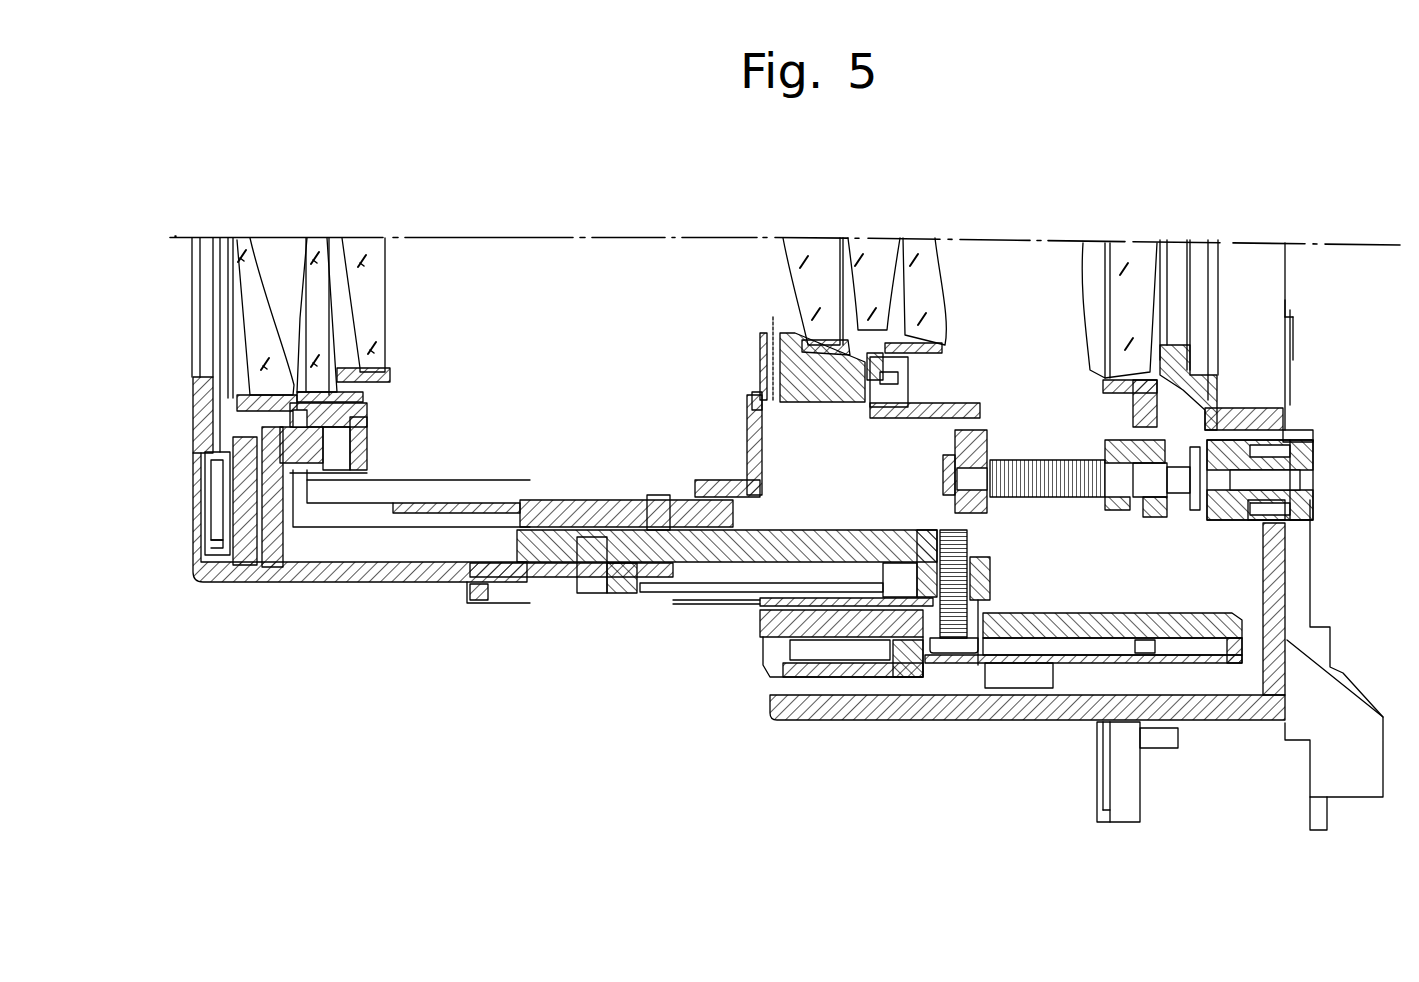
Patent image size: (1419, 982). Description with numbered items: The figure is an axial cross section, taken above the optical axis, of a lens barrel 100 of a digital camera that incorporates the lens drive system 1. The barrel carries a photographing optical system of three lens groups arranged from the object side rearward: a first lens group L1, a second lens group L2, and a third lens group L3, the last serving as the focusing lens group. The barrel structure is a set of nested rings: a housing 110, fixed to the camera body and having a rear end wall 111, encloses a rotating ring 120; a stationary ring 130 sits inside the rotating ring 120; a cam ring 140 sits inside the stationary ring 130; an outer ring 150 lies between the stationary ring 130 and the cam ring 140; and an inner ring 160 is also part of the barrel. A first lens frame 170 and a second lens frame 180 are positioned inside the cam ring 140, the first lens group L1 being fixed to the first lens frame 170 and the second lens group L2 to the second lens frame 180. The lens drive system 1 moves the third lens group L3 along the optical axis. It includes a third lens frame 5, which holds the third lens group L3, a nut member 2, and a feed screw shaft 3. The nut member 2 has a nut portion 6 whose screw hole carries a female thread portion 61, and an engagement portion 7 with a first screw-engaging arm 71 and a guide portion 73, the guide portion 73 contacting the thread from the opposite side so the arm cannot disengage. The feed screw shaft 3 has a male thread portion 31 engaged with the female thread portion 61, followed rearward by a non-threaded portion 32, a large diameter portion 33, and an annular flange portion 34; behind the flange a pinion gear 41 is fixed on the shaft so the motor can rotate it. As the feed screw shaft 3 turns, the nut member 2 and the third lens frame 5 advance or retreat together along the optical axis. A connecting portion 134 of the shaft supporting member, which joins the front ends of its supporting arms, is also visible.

The lens barrel 100 is at (677, 220).
The first lens group L1 is at (360, 246).
The second lens group L2 is at (905, 250).
The third lens group L3 is at (1137, 262).
The lens drive system 1 is at (1035, 286).
The nut member 2 is at (1200, 440).
The feed screw shaft 3 is at (1013, 448).
The male thread portion 31 is at (1030, 498).
The non-threaded portion 32 is at (1140, 518).
The large diameter portion 33 is at (1195, 512).
The annular flange portion 34 is at (1222, 522).
The pinion gear 41 is at (1300, 442).
The third lens frame 5 is at (1083, 300).
The nut portion 6 is at (1083, 640).
The female thread portion 61 is at (1145, 488).
The engagement portion 7 is at (1105, 443).
The first screw-engaging arm 71 is at (1130, 430).
The guide portion 73 is at (1108, 516).
The housing 110 is at (1000, 722).
The rear end wall 111 is at (1287, 590).
The rotating ring 120 is at (912, 652).
The stationary ring 130 is at (837, 612).
The connecting portion 134 is at (945, 455).
The cam ring 140 is at (734, 548).
The outer ring 150 is at (655, 567).
The inner ring 160 is at (337, 582).
The first lens frame 170 is at (380, 397).
The second lens frame 180 is at (964, 404).